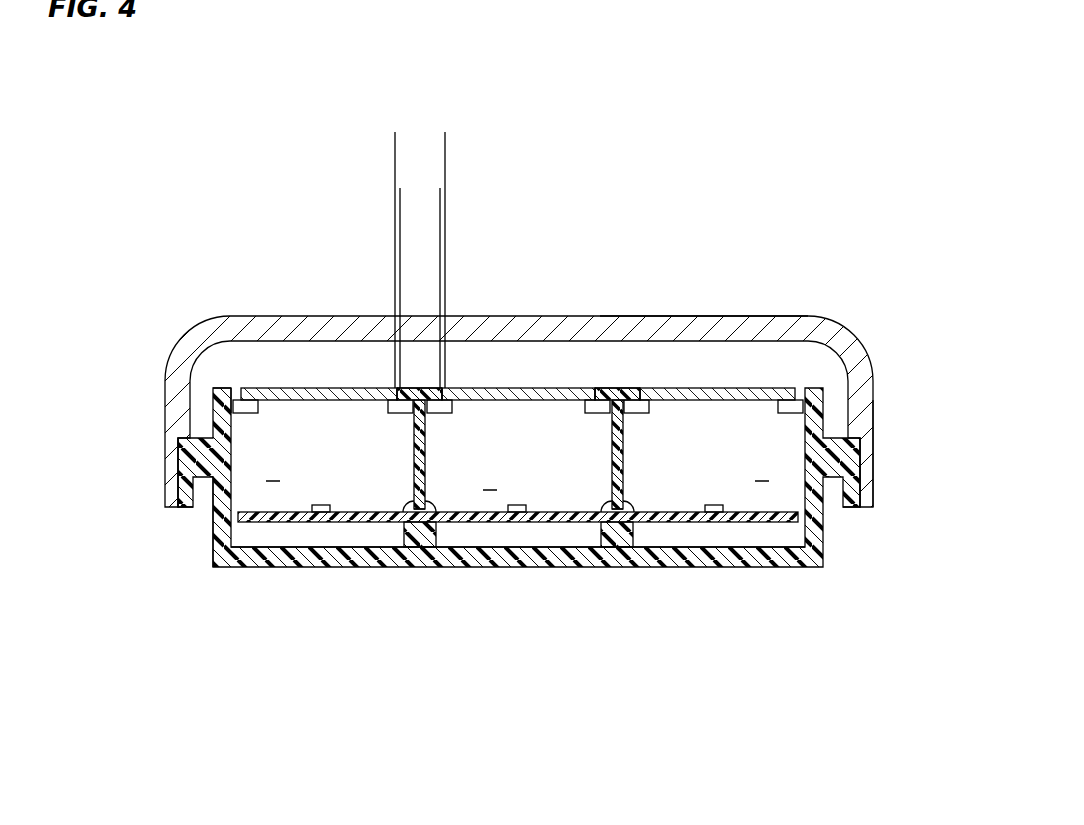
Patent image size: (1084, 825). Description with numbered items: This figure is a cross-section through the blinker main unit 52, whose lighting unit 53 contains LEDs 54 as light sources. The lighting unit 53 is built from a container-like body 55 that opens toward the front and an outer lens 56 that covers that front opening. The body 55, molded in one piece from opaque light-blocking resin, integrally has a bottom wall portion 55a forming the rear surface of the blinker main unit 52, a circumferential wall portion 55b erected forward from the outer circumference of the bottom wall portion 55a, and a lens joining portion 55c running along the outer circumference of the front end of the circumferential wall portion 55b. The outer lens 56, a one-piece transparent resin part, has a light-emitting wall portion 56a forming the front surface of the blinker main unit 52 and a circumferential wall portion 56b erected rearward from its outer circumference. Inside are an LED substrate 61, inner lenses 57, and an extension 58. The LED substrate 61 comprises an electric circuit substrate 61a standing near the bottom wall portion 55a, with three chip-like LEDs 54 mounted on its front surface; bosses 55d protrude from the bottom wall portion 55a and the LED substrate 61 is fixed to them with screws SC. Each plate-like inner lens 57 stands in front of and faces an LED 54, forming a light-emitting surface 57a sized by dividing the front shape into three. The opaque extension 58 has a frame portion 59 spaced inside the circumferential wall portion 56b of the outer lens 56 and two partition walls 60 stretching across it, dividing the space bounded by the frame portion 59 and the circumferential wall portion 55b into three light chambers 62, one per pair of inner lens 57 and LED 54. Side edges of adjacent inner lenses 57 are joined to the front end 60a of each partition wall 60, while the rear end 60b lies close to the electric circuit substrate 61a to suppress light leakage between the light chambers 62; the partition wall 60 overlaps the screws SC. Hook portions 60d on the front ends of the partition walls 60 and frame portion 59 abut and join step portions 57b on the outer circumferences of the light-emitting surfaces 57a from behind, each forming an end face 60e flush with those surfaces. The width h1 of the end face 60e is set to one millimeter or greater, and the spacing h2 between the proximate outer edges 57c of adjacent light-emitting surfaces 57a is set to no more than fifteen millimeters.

The blinker main unit 52 is at (507, 426).
The lighting unit 53 is at (563, 354).
The LED 54 is at (321, 505).
The body 55 is at (493, 520).
The bottom wall portion 55a is at (515, 551).
The circumferential wall portion 55b is at (213, 547).
The lens joining portion 55c is at (165, 490).
The boss 55d is at (415, 540).
The outer lens 56 is at (563, 373).
The light-emitting wall portion 56a is at (733, 317).
The circumferential wall portion 56b is at (870, 382).
The inner lens 57 is at (521, 325).
The light-emitting surface 57a is at (277, 388).
The step portion 57b is at (392, 412).
The outer edge 57c is at (394, 401).
The extension 58 is at (212, 386).
The frame portion 59 is at (232, 402).
The partition wall 60 is at (551, 408).
The front end 60a is at (411, 390).
The rear end 60b is at (428, 511).
The hook portion 60d is at (583, 248).
The end face 60e is at (433, 390).
The LED substrate 61 is at (515, 633).
The electric circuit substrate 61a is at (310, 524).
The light chamber 62 is at (273, 483).
The screw SC is at (405, 512).
The width of end face h1 is at (470, 197).
The spacing between outer edges h2 is at (475, 140).